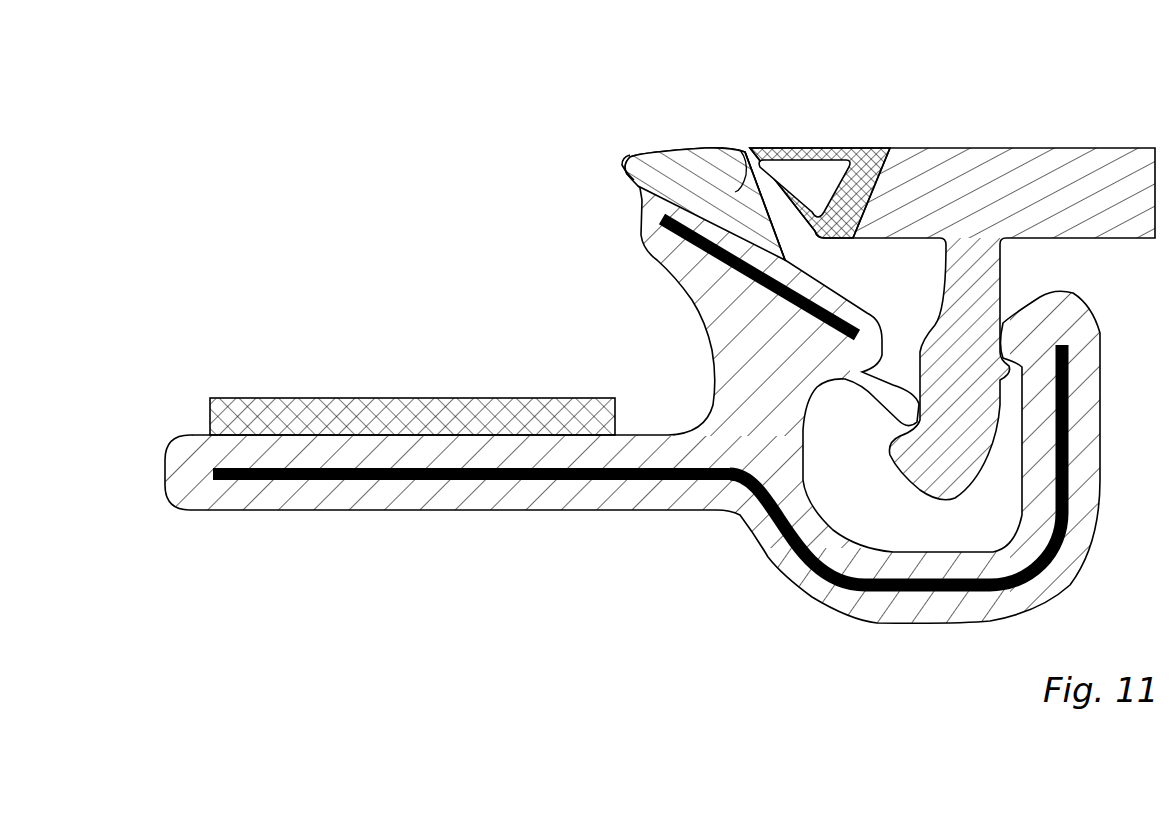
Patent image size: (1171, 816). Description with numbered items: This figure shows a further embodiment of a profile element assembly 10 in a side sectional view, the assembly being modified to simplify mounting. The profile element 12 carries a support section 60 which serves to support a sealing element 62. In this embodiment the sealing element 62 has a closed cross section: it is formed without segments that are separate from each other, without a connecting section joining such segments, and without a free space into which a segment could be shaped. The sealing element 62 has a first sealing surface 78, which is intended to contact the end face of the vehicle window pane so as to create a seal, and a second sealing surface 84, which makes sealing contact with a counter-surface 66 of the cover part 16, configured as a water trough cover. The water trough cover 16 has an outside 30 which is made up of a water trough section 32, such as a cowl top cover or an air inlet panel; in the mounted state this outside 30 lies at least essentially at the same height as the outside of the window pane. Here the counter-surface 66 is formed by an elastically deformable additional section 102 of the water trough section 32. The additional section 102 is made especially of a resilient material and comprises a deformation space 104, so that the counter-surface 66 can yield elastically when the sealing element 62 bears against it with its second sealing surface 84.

The profile element assembly 10 is at (652, 334).
The profile element 12 is at (630, 348).
The cover part 16 is at (952, 264).
The outside 30 is at (1113, 132).
The water trough section 32 is at (950, 182).
The support section 60 is at (655, 230).
The sealing element 62 is at (666, 158).
The counter-surface 66 is at (746, 196).
The first sealing surface 78 is at (614, 171).
The second sealing surface 84 is at (789, 237).
The additional section 102 is at (820, 133).
The deformation space 104 is at (804, 122).